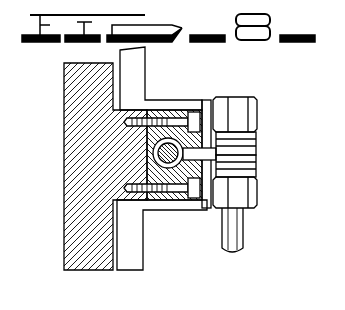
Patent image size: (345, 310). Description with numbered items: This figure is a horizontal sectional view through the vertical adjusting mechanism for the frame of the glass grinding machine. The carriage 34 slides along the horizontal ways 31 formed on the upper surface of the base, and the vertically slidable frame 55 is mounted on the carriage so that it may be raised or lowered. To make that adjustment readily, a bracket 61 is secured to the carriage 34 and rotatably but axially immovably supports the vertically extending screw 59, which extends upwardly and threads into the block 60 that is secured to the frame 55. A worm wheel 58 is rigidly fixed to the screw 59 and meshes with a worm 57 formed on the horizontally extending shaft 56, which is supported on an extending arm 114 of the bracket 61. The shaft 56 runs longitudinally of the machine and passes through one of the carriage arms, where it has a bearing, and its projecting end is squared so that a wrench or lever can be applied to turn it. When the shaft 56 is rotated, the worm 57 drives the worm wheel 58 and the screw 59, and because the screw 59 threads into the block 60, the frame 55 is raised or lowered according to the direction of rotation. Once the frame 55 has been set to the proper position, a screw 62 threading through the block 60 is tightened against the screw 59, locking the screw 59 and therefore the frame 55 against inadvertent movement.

The vertically slidable frame 55 is at (66, 172).
The bracket 61 is at (144, 72).
The carriage 34 is at (130, 268).
The screw 59 is at (170, 160).
The block 60 is at (172, 110).
The worm wheel 58 is at (206, 103).
The extending arm 114 is at (258, 108).
The worm 57 is at (252, 146).
The screw 62 is at (254, 155).
The shaft 56 is at (243, 236).
The ways 31 is at (189, 306).